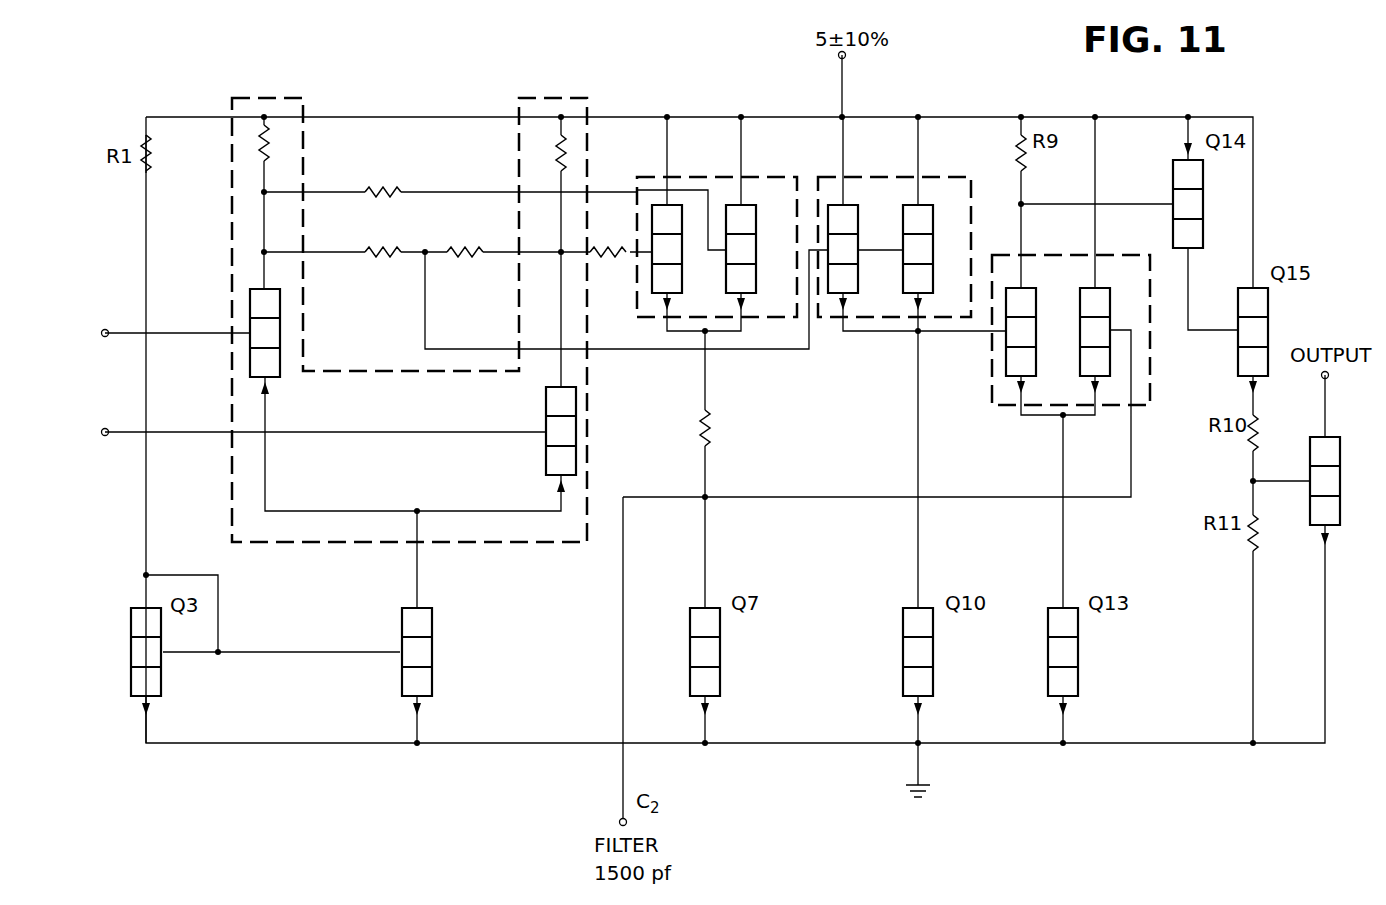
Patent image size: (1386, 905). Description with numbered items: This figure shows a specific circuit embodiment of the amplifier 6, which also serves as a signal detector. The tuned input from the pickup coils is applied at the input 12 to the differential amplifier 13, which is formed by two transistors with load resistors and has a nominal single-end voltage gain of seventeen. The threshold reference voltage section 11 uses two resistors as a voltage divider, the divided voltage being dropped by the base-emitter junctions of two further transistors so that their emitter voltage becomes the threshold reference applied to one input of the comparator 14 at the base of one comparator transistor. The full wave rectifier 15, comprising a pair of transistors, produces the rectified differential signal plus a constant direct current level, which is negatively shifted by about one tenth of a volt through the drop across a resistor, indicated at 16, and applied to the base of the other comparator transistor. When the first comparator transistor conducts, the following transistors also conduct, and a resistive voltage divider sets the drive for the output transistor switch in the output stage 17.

The amplifier 6 is at (336, 62).
The threshold reference voltage section 11 is at (928, 176).
The input 12 is at (110, 485).
The differential amplifier 13 is at (587, 97).
The differential comparator 14 is at (994, 406).
The full wave rectifier 15 is at (769, 176).
The resistor R8 voltage shift 16 is at (702, 428).
The output stage 17 is at (1341, 506).